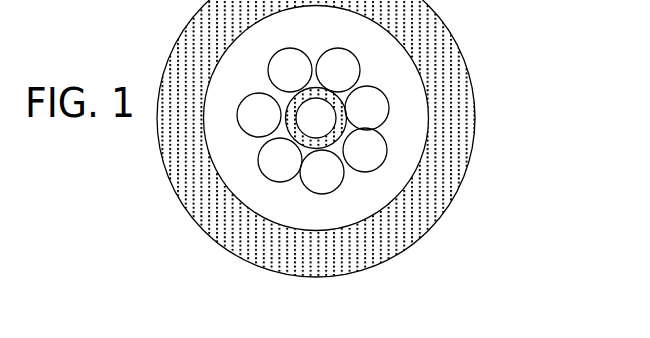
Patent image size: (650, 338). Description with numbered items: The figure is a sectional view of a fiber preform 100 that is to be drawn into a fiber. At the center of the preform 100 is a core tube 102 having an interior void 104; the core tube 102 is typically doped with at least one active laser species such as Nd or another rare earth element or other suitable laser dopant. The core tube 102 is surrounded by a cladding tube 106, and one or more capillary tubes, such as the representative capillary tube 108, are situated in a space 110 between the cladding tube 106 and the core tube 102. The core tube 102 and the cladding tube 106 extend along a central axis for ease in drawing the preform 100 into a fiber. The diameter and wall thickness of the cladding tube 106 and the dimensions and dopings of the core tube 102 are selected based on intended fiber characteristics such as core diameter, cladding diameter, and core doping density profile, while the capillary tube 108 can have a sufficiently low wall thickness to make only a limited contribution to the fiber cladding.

The fiber preform 100 is at (503, 44).
The core tube 102 is at (290, 139).
The interior void 104 is at (315, 117).
The cladding tube 106 is at (472, 143).
The capillary tube 108 is at (388, 108).
The space 110 is at (333, 224).